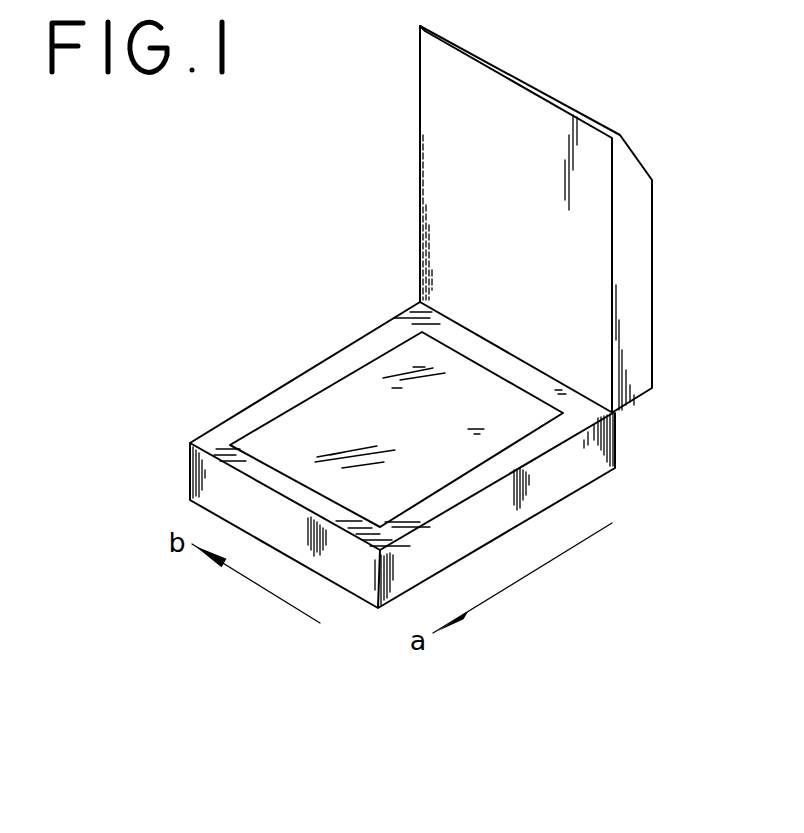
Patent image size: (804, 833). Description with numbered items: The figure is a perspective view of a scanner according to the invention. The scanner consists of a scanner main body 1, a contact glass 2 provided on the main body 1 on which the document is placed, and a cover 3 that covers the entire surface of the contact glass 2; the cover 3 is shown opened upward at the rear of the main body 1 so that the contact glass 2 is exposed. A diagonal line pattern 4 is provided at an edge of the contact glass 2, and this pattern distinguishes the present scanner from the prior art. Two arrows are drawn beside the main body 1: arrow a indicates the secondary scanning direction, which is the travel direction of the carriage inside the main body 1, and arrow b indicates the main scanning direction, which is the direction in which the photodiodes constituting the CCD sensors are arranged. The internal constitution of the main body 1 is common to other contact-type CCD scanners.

The scanner main body 1 is at (598, 452).
The contact glass 2 is at (513, 427).
The cover 3 is at (633, 322).
The diagonal line pattern 4 is at (332, 388).